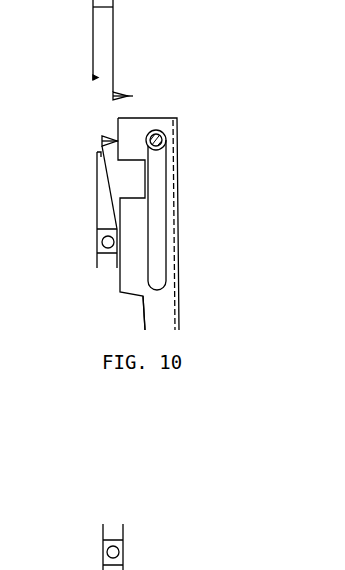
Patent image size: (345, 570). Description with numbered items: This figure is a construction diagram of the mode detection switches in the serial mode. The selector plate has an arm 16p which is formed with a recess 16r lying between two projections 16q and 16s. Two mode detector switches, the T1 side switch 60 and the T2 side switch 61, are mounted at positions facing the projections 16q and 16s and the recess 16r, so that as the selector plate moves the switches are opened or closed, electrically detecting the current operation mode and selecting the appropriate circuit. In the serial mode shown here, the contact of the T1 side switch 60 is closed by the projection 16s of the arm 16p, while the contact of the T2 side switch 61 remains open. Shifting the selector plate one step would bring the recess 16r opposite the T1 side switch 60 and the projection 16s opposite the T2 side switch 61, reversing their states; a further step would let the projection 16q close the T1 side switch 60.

The arm 16p is at (152, 316).
The projection 16q is at (143, 263).
The recess 16r is at (138, 185).
The projection 16s is at (140, 148).
The T1 side switch 60 is at (101, 240).
The T2 side switch 61 is at (93, 39).